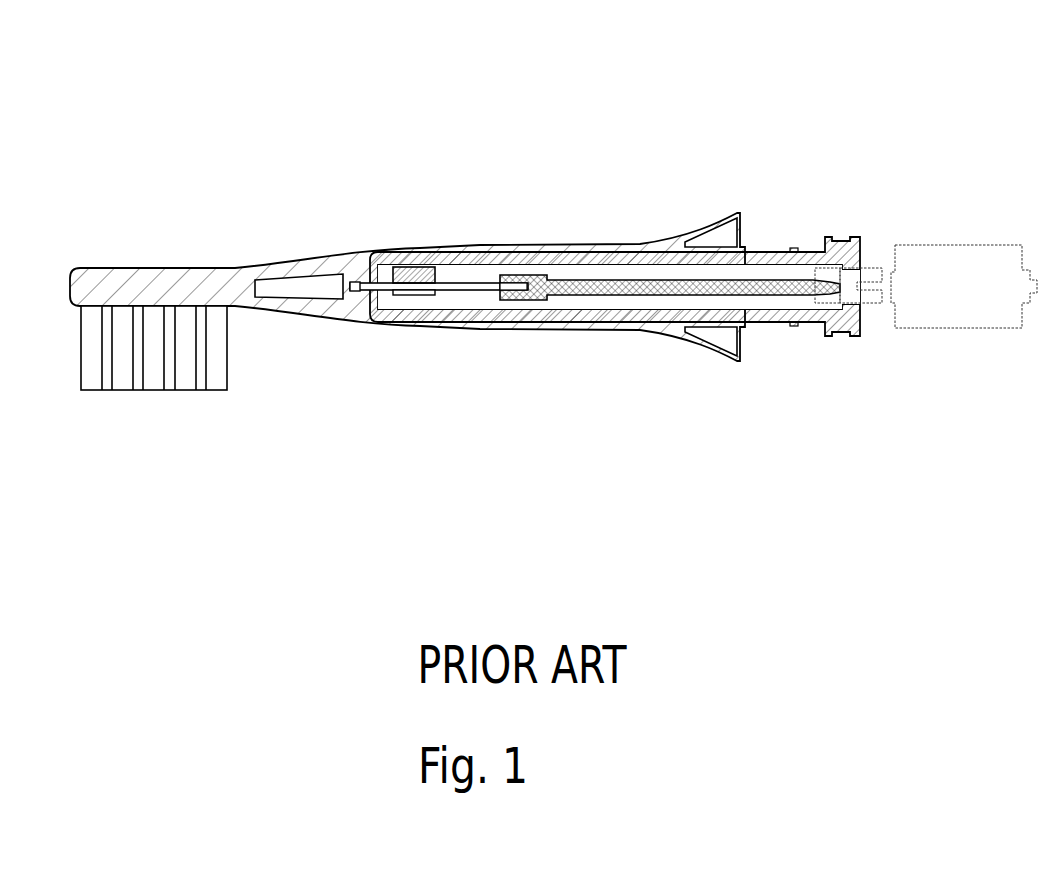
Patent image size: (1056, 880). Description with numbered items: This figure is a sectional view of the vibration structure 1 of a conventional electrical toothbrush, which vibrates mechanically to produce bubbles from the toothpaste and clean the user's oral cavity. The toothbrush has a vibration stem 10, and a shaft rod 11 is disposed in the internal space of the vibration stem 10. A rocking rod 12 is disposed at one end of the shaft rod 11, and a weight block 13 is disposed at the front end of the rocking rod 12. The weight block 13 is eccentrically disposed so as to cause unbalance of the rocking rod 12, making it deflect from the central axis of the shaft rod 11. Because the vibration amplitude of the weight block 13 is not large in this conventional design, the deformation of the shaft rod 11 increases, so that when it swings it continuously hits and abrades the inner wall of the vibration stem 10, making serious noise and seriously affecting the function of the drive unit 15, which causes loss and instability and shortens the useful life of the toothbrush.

The vibration structure 1 is at (553, 258).
The vibration stem 10 is at (760, 313).
The shaft rod 11 is at (662, 290).
The rocking rod 12 is at (473, 297).
The weight block 13 is at (433, 250).
The drive unit 15 is at (960, 265).